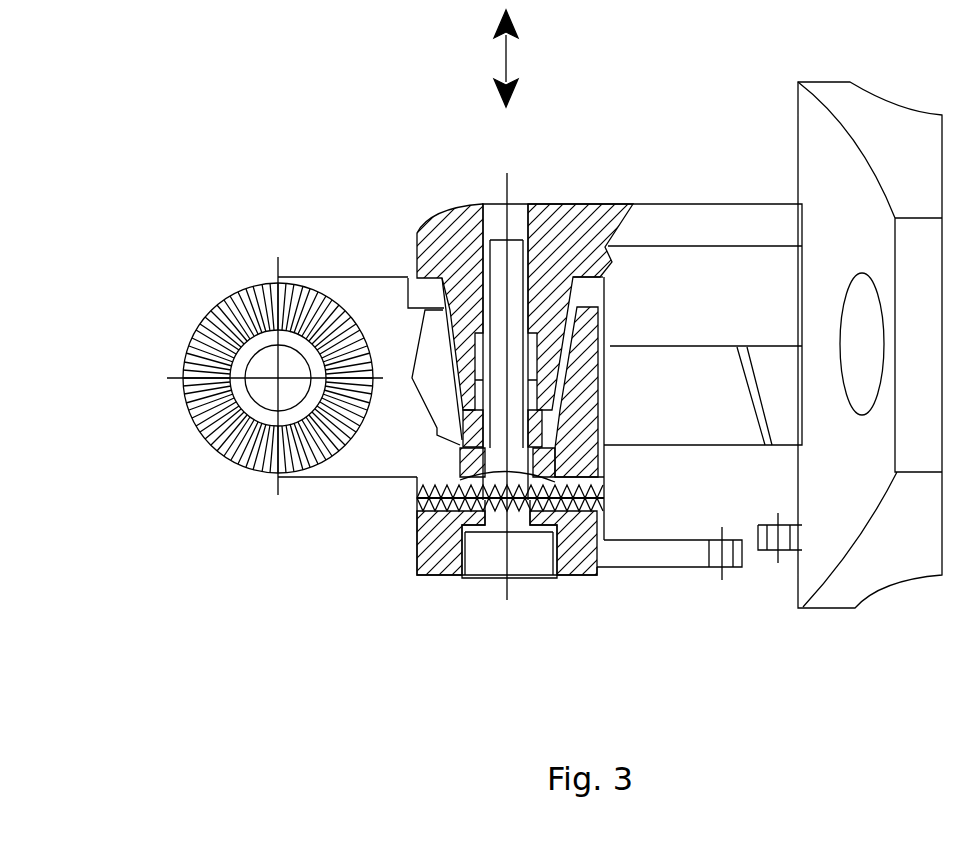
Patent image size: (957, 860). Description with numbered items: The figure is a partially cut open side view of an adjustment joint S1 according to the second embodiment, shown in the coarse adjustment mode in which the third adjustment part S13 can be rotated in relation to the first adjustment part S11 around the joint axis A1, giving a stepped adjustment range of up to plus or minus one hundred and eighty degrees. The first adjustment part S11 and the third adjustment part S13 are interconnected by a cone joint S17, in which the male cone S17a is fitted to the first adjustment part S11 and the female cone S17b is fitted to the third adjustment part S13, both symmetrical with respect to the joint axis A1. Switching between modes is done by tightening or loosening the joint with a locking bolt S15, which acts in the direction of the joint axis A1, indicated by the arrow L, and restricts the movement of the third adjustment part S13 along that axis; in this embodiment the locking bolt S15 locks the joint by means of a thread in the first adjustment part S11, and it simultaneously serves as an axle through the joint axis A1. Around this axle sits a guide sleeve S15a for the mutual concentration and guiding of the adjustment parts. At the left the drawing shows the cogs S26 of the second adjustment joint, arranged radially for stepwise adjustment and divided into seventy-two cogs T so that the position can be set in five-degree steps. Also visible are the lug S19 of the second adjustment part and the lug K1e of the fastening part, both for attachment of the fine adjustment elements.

The arrow indicating direction of the joint axis L is at (506, 55).
The joint axis A1 is at (507, 173).
The adjustment joint S1 is at (415, 193).
The first adjustment part S11 is at (620, 203).
The third adjustment part S13 is at (610, 347).
The locking bolt S15 is at (487, 615).
The guide sleeve S15a is at (475, 450).
The cone joint S17 is at (415, 277).
The male cone S17a is at (418, 290).
The female cone S17b is at (423, 347).
The lug S19 is at (638, 552).
The cogs S26 is at (202, 477).
The lug K1e is at (773, 543).
The cogs T is at (187, 415).